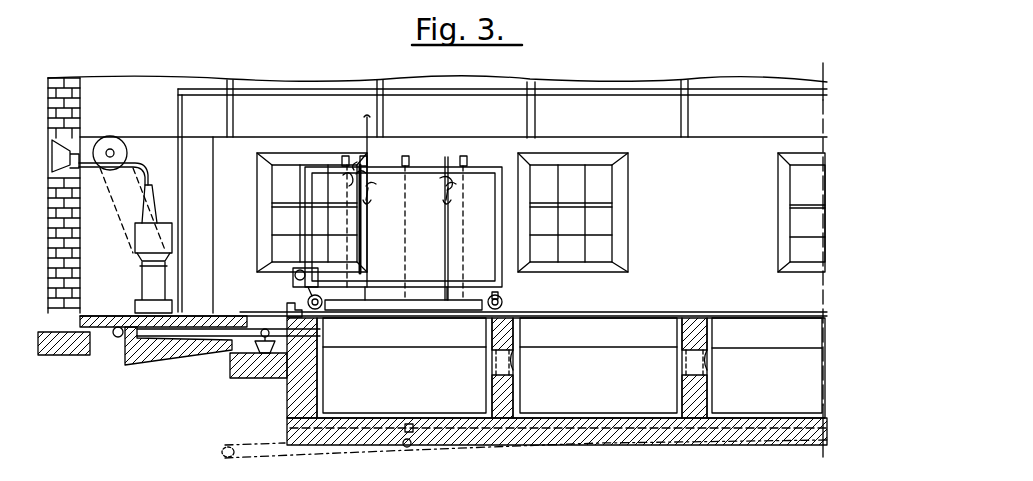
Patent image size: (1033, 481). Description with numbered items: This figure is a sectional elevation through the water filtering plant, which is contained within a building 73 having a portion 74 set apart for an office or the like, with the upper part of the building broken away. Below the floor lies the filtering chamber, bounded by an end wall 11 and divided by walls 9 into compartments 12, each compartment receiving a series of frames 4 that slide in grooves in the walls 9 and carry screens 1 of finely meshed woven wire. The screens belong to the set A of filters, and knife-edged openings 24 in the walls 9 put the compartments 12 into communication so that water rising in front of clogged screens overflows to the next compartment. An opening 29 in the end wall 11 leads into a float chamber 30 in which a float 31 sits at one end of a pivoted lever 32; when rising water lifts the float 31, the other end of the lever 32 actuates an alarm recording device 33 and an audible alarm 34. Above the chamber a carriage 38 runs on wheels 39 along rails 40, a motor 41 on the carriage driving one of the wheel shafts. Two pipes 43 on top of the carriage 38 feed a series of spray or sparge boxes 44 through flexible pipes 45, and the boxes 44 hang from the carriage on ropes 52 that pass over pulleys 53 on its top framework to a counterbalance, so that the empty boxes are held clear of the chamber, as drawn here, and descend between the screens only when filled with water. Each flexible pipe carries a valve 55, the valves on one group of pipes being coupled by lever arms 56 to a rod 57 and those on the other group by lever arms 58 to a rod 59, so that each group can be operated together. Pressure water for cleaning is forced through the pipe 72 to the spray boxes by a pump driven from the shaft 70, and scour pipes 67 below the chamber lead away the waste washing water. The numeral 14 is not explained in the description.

The screen 1 is at (571, 368).
The set of filters A is at (598, 335).
The frame 4 is at (485, 400).
The wall 9 is at (493, 383).
The end wall 11 is at (320, 382).
The compartment 12 is at (572, 338).
The partition 14 is at (703, 402).
The opening 24 is at (525, 356).
The opening 29 is at (320, 340).
The float chamber 30 is at (258, 320).
The float 31 is at (242, 356).
The pivoted lever 32 is at (203, 341).
The alarm recording device 33 is at (136, 240).
The audible alarm 34 is at (63, 164).
The carriage 38 is at (497, 203).
The wheel 39 is at (307, 300).
The rail 40 is at (600, 312).
The motor 41 is at (293, 271).
The pipe 43 is at (404, 200).
The spray or sparge box 44 is at (403, 295).
The flexible pipe 45 is at (363, 264).
The rope 52 is at (343, 180).
The pulley 53 is at (340, 156).
The valve or cock 55 is at (370, 185).
The lever arm 56 is at (372, 204).
The rod 57 is at (370, 196).
The lever arm 58 is at (350, 173).
The rod 59 is at (360, 168).
The scour pipe 67 is at (407, 439).
The shaft 70 is at (124, 153).
The pipe 72 is at (116, 338).
The building 73 is at (72, 283).
The office portion 74 is at (109, 297).